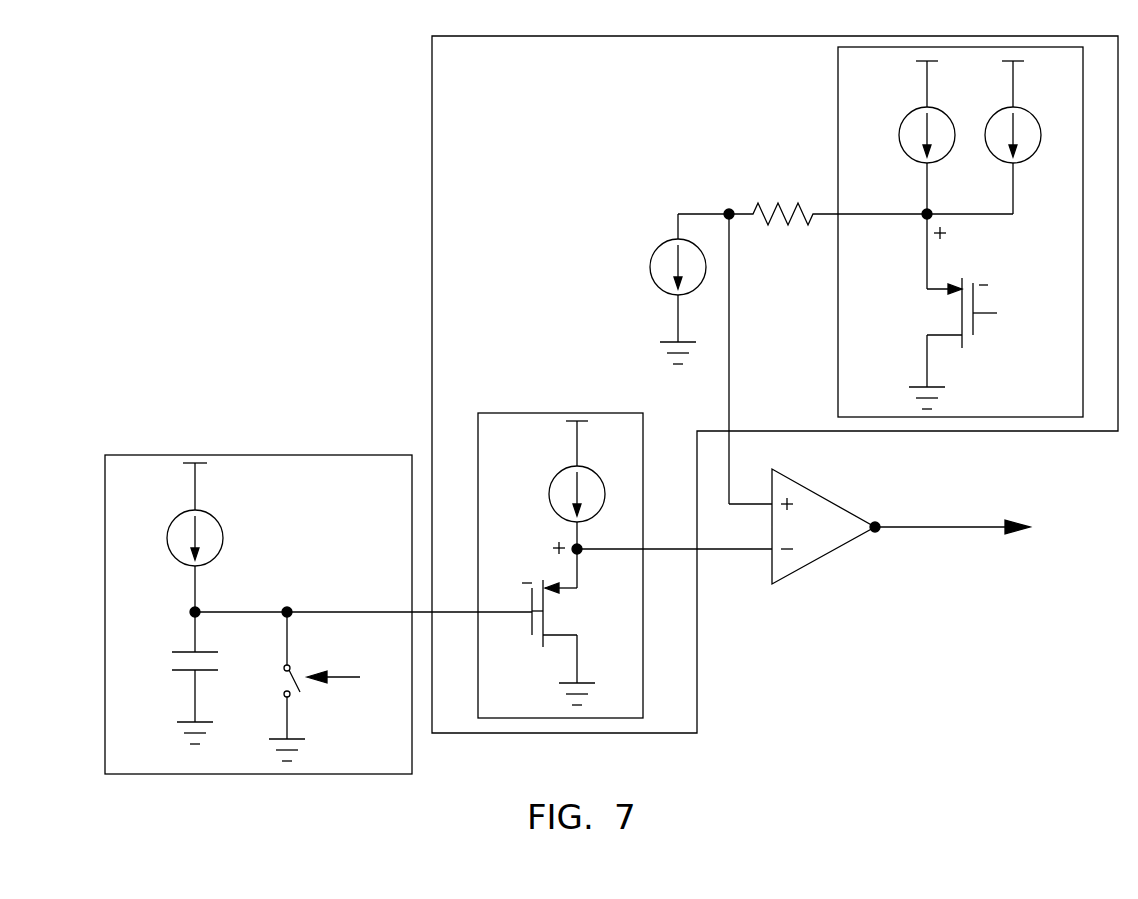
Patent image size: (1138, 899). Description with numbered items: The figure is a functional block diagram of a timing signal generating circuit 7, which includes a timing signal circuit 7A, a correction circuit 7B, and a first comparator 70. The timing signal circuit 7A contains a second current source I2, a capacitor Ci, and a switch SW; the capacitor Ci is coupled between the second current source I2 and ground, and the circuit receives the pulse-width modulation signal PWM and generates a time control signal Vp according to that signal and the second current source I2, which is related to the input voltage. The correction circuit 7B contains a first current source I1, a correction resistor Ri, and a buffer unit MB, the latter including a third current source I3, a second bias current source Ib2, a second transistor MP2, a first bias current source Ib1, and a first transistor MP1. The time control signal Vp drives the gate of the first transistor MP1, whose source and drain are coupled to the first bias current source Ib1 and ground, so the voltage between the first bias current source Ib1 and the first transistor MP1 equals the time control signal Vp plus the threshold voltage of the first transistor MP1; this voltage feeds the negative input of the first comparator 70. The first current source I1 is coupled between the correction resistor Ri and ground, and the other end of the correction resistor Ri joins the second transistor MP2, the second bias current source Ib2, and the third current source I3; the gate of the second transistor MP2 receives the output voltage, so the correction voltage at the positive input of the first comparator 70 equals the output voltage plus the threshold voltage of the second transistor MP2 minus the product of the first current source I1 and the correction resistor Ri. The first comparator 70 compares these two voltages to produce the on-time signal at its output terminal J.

The timing signal generating circuit 7 is at (279, 243).
The timing signal circuit 7A is at (400, 478).
The correction circuit 7B is at (473, 75).
The first comparator 70 is at (838, 540).
The buffer unit MB is at (515, 440).
The first current source I1 is at (679, 289).
The second current source I2 is at (176, 537).
The third current source I3 is at (997, 137).
The first bias current source Ib1 is at (552, 485).
The second bias current source Ib2 is at (903, 137).
The correction resistor Ri is at (828, 197).
The capacitor Ci is at (173, 678).
The switch SW is at (300, 688).
The pulse-width modulation signal PWM is at (364, 677).
The time control signal Vp is at (292, 597).
The first transistor MP1 is at (578, 626).
The second transistor MP2 is at (966, 311).
The output terminal J is at (874, 540).